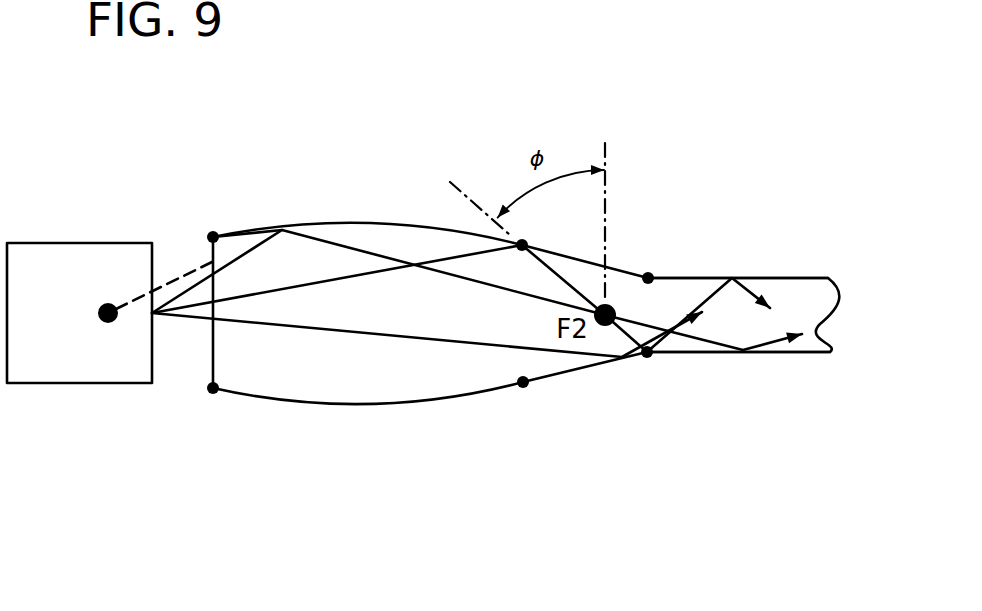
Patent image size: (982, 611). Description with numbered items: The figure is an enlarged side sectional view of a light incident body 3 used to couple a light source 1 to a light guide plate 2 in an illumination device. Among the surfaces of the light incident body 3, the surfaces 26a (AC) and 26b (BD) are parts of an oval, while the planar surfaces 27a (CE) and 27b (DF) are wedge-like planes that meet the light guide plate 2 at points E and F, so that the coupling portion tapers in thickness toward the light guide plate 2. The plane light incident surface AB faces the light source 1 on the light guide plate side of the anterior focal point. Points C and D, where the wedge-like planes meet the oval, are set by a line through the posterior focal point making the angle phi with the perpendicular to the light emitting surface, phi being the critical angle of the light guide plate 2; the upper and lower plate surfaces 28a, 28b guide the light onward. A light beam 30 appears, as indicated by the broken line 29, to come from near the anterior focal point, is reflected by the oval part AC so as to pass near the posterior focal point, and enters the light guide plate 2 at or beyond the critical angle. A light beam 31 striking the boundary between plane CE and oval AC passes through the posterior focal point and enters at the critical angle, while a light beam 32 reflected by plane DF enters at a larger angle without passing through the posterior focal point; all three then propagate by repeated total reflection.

The light source 1 is at (57, 242).
The light guide plate 2 is at (802, 290).
The light incident body 3 is at (345, 385).
The surface 26a is at (360, 224).
The surface 26b is at (386, 407).
The planar surface 27a is at (633, 270).
The planar surface 27b is at (580, 370).
The upper surface of light guide plate 28a is at (780, 277).
The lower surface of light guide plate 28b is at (777, 354).
The broken line 29 is at (188, 275).
The light beam 30 is at (328, 245).
The light beam 31 is at (357, 277).
The light beam 32 is at (335, 337).